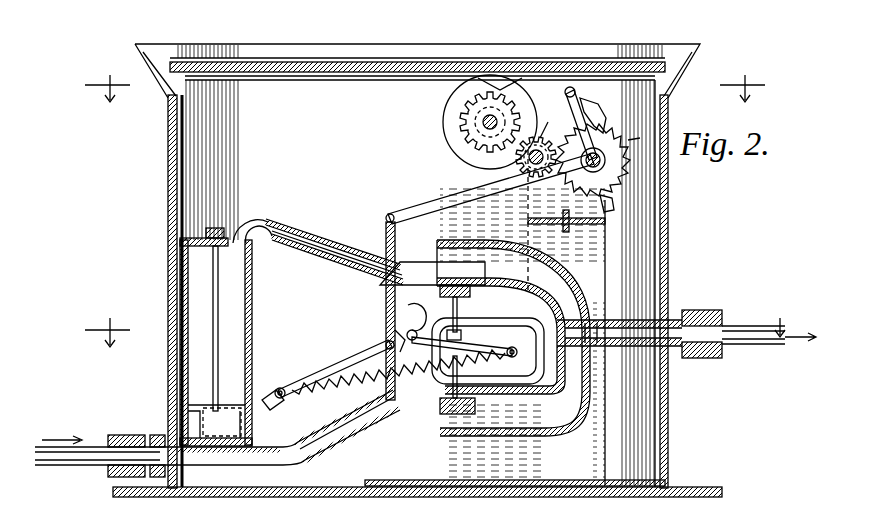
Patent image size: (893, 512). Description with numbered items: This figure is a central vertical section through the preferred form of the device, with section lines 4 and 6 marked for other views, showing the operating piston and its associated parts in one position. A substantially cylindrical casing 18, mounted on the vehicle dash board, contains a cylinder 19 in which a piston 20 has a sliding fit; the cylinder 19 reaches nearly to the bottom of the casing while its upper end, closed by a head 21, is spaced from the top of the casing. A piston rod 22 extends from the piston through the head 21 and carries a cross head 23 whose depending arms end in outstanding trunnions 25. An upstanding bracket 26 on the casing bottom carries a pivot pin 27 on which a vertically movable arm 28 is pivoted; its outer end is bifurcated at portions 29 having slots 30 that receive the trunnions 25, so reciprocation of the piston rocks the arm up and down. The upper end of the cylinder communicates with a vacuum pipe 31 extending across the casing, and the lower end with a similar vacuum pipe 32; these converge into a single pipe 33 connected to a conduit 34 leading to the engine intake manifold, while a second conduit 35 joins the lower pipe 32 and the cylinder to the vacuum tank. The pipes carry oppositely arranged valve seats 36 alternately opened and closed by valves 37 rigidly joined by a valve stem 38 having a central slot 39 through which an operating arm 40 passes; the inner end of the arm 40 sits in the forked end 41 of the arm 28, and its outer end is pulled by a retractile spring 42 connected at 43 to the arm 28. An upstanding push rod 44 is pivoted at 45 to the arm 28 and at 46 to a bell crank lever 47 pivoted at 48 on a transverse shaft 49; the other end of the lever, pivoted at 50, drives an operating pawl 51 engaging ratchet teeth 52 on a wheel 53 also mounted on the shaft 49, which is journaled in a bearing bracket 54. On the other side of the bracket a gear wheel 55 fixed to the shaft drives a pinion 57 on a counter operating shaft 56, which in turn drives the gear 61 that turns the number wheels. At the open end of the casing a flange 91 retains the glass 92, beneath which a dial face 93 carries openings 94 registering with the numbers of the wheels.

The casing 18 is at (668, 423).
The cylinder 19 is at (250, 345).
The piston 20 is at (170, 400).
The head 21 is at (168, 258).
The piston rod 22 is at (218, 322).
The cross head 23 is at (248, 220).
The trunnions 25 is at (238, 490).
The bracket 26 is at (395, 480).
The pivot pin 27 is at (396, 330).
The arm 28 is at (345, 360).
The bifurcated portions 29 is at (280, 388).
The slots 30 is at (230, 405).
The vacuum pipe 31 is at (328, 232).
The vacuum pipe 32 is at (345, 443).
The single pipe 33 is at (622, 318).
The conduit 34 is at (758, 328).
The second conduit 35 is at (80, 466).
The valve seats 36 is at (455, 248).
The valves 37 is at (491, 407).
The valve stem 38 is at (466, 314).
The slot 39 is at (412, 348).
The operating arm 40 is at (518, 352).
The forked end 41 is at (411, 315).
The retractile spring 42 is at (350, 386).
The spring connection 43 is at (271, 405).
The push rod 44 is at (386, 236).
The pivot connection 45 is at (386, 345).
The pivot connection 46 is at (386, 207).
The bell crank lever 47 is at (427, 210).
The pivot 48 is at (612, 165).
The transverse shaft 49 is at (617, 205).
The pivot connection 50 is at (570, 87).
The operating pawl 51 is at (590, 100).
The ratchet teeth 52 is at (640, 138).
The wheel 53 is at (578, 220).
The bearing bracket 54 is at (600, 270).
The gear wheel 55 is at (604, 128).
The counter operating shaft 56 is at (525, 165).
The pinion 57 is at (548, 123).
The gear 61 is at (460, 120).
The flange 91 is at (182, 45).
The glass 92 is at (256, 62).
The dial face 93 is at (378, 80).
The openings 94 is at (500, 78).
The section line 4 is at (450, 328).
The section line 6 is at (425, 85).